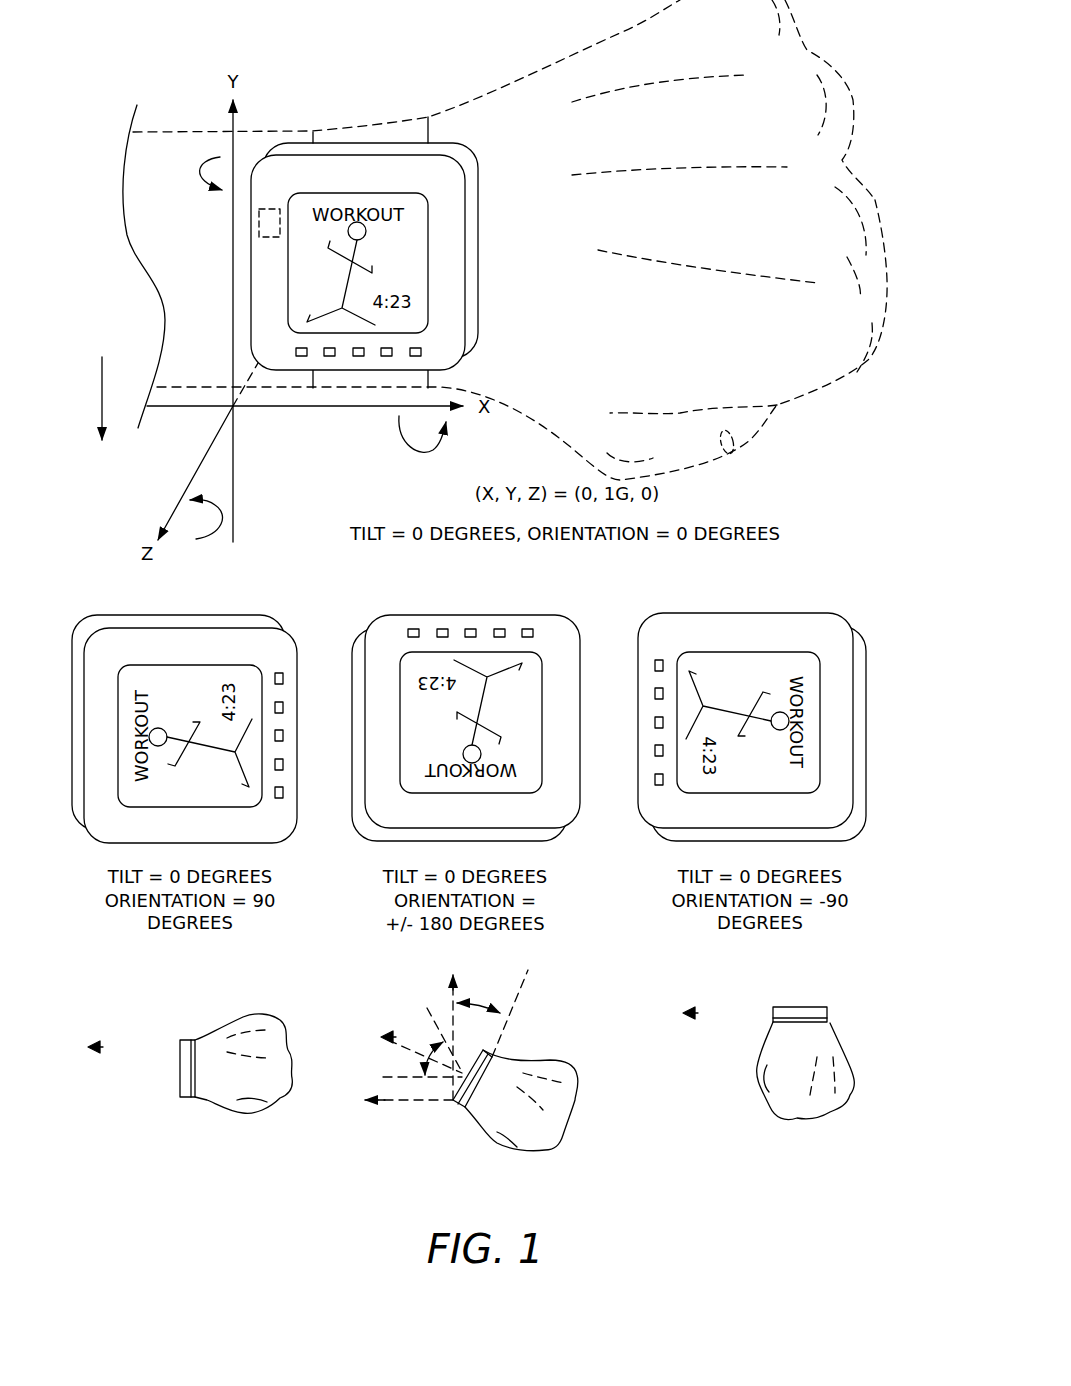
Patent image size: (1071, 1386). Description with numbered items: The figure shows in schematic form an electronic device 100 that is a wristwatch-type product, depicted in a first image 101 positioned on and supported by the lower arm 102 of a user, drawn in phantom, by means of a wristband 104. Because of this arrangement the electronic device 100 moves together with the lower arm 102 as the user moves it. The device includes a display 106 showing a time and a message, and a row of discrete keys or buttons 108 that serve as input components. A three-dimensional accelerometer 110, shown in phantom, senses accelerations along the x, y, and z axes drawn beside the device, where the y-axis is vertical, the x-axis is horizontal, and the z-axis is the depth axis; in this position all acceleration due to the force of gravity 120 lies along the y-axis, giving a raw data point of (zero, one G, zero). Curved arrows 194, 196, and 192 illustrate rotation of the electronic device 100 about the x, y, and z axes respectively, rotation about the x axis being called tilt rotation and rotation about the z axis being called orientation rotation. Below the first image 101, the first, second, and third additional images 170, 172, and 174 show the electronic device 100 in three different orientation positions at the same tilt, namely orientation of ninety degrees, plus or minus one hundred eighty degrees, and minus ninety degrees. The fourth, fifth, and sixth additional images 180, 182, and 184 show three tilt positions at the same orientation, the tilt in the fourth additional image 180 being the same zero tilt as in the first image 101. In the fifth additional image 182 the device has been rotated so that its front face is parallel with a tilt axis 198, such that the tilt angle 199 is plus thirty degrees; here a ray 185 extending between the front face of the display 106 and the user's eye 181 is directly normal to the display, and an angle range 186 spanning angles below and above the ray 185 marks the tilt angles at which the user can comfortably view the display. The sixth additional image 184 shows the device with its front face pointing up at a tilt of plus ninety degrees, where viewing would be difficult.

The electronic device 100 is at (488, 625).
The first image 101 is at (520, 66).
The lower arm 102 is at (263, 126).
The wristband 104 is at (432, 128).
The display 106 is at (405, 232).
The buttons 108 is at (433, 353).
The three-dimensional accelerometer 110 is at (269, 237).
The force of gravity 120 is at (98, 483).
The first additional image 170 is at (293, 608).
The second additional image 172 is at (583, 608).
The third additional image 174 is at (839, 608).
The fourth additional image 180 is at (257, 1124).
The eye 181 is at (91, 1032).
The fifth additional image 182 is at (574, 1138).
The sixth additional image 184 is at (841, 1120).
The ray 185 is at (412, 1046).
The angle range 186 is at (439, 1046).
The curved arrow 192 is at (197, 540).
The curved arrow 194 is at (425, 455).
The curved arrow 196 is at (197, 177).
The tilt axis 198 is at (520, 987).
The tilt angle 199 is at (476, 1002).